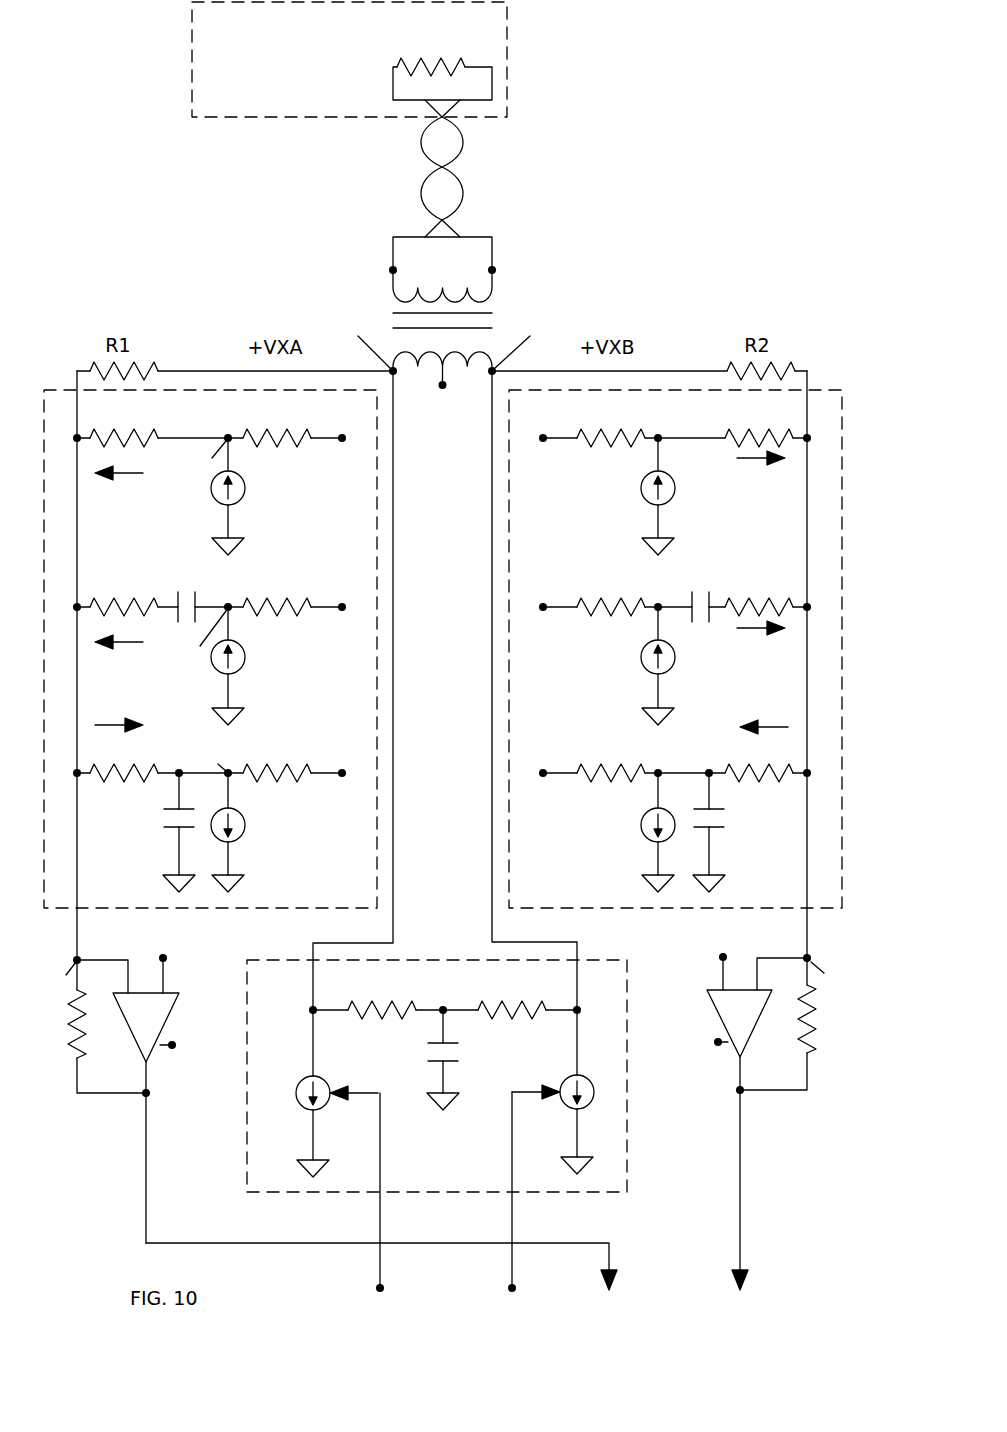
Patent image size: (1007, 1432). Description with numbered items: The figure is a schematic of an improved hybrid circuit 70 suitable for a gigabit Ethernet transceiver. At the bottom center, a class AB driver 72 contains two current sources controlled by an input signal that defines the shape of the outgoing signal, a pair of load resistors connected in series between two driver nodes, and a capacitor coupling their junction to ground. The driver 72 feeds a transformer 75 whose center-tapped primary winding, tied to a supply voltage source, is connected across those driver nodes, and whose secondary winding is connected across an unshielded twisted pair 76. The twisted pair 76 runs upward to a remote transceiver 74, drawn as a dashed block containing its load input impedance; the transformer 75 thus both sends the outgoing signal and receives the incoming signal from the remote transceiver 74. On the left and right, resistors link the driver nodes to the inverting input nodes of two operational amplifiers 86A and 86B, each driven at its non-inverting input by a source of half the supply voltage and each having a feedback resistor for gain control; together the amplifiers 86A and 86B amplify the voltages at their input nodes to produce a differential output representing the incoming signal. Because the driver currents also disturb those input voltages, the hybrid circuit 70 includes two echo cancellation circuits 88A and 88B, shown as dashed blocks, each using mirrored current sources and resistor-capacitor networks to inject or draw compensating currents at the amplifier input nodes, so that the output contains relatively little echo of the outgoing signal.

The remote transceiver 74 is at (257, 114).
The unshielded twisted pair 76 is at (460, 189).
The transformer 75 is at (524, 257).
The echo cancellation circuit 88A is at (322, 905).
The echo cancellation circuit 88B is at (522, 905).
The class AB driver 72 is at (411, 1140).
The operational amplifier 86A is at (151, 1046).
The operational amplifier 86B is at (743, 1042).
The hybrid circuit 70 is at (118, 1199).